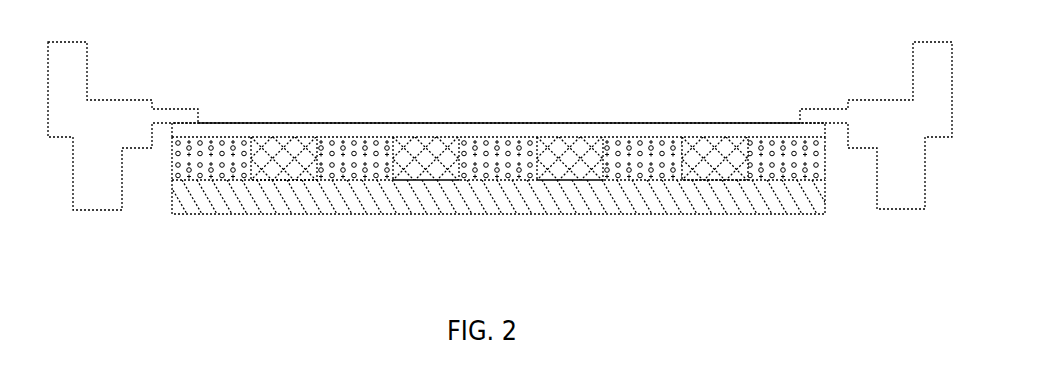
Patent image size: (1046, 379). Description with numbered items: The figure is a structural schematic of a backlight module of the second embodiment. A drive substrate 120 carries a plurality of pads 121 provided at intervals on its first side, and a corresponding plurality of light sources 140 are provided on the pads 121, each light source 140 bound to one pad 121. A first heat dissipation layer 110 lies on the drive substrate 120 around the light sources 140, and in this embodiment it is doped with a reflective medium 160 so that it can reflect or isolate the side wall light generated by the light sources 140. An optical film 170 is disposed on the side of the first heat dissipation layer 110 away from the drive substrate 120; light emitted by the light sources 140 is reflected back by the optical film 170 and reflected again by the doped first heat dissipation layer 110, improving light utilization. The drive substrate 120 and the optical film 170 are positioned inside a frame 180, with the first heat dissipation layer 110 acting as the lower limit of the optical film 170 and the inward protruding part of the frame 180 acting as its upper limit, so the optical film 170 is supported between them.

The first heat dissipation layer 110 is at (625, 181).
The drive substrate 120 is at (298, 214).
The pads 121 is at (410, 160).
The light source 140 is at (288, 137).
The reflective medium 160 is at (638, 138).
The optical film 170 is at (720, 123).
The frame 180 is at (888, 183).